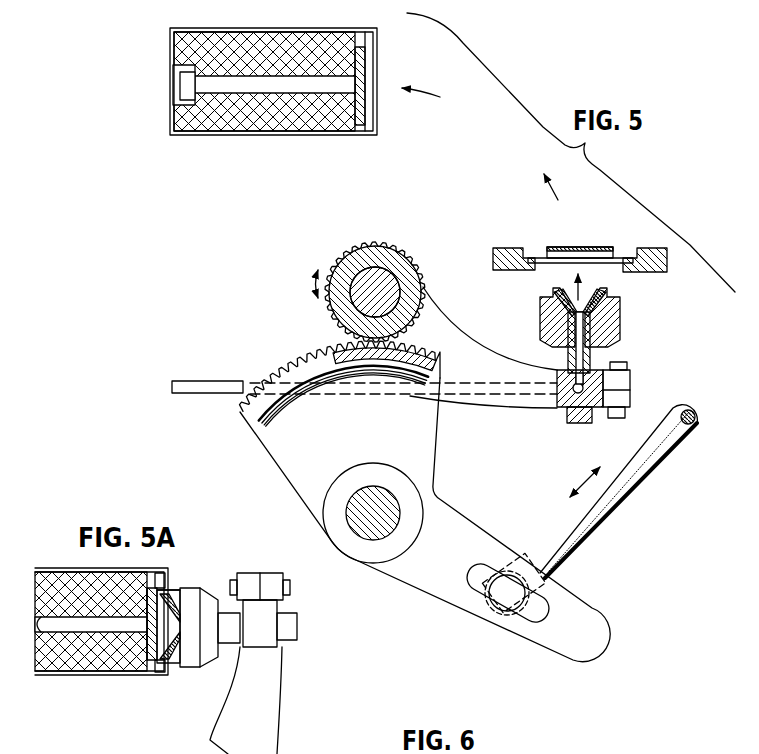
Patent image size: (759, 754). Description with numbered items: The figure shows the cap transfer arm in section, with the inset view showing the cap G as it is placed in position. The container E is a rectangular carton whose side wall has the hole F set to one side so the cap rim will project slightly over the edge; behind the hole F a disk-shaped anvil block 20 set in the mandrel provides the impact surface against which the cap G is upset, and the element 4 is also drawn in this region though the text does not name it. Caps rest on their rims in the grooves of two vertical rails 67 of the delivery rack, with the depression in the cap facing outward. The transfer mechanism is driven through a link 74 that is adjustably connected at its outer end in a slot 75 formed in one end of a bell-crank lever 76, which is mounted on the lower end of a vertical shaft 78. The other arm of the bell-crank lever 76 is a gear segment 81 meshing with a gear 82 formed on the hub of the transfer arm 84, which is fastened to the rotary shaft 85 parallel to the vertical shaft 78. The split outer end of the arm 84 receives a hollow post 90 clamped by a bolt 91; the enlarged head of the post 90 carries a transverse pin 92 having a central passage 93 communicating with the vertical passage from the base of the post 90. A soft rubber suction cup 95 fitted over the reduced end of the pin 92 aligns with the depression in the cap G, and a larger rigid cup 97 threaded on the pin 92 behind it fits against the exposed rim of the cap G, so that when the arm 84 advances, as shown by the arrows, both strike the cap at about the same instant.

In FIG. 5, the cartridge 4 is at (210, 93).
In FIG. 5A, the cartridge 4 is at (60, 658).
In FIG. 5A, the anvil block 20 is at (160, 648).
In FIG. 5, the vertical rails 67 is at (507, 270).
In FIG. 5, the link 74 is at (648, 478).
In FIG. 5, the slot 75 is at (537, 613).
In FIG. 5, the bell-crank lever 76 is at (410, 574).
In FIG. 5, the vertical shaft 78 is at (381, 517).
In FIG. 5, the gear segment 81 is at (290, 363).
In FIG. 5, the gear 82 is at (378, 247).
In FIG. 5, the transfer arm 84 is at (523, 400).
In FIG. 5A, the transfer arm 84 is at (273, 697).
In FIG. 5, the rotary shaft 85 is at (380, 281).
In FIG. 5, the hollow post 90 is at (567, 372).
In FIG. 5, the bolt 91 is at (620, 413).
In FIG. 5, the transverse pin 92 is at (583, 417).
In FIG. 5, the central passage 93 is at (582, 360).
In FIG. 5, the suction cup 95 is at (597, 293).
In FIG. 5A, the suction cup 95 is at (178, 588).
In FIG. 5, the rigid cup 97 is at (613, 327).
In FIG. 5A, the rigid cup 97 is at (190, 661).
In FIG. 5, the container E is at (315, 133).
In FIG. 5A, the container E is at (103, 675).
In FIG. 5, the hole F is at (378, 60).
In FIG. 5, the cap G is at (600, 246).
In FIG. 5A, the cap G is at (148, 650).